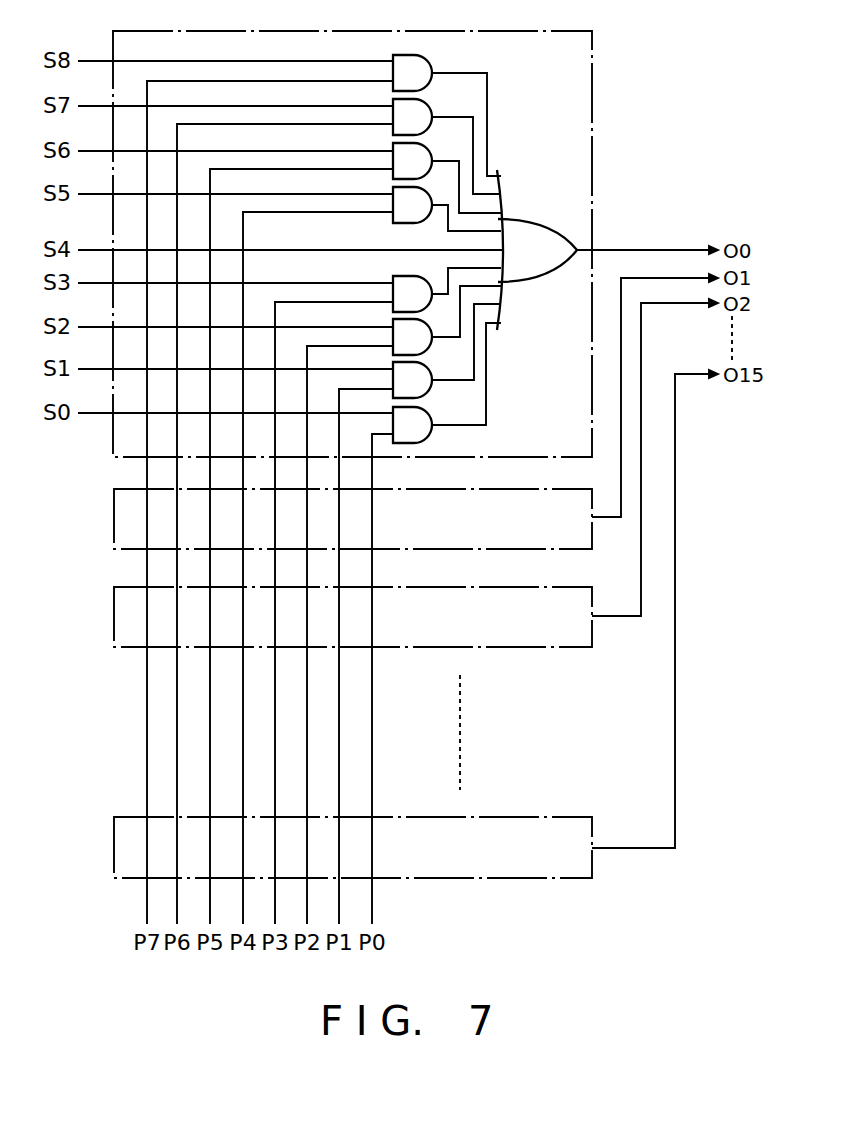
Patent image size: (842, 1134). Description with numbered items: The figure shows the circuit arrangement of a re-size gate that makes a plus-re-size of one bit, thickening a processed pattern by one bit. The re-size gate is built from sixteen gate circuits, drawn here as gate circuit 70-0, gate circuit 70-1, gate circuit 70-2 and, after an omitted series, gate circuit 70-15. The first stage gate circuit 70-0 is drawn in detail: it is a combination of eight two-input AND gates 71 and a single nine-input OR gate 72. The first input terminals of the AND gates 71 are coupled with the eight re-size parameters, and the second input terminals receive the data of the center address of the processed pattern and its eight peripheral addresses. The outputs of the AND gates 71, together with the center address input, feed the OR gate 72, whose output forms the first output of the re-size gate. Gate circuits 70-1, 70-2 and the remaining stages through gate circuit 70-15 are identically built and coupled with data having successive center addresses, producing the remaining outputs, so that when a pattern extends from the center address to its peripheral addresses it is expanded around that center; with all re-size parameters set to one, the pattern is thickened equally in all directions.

The AND gate 71 is at (433, 56).
The OR gate 72 is at (528, 218).
The gate circuit 70-0 is at (593, 53).
The gate circuit 70-1 is at (573, 549).
The gate circuit 70-2 is at (573, 647).
The gate circuit 70-15 is at (573, 878).